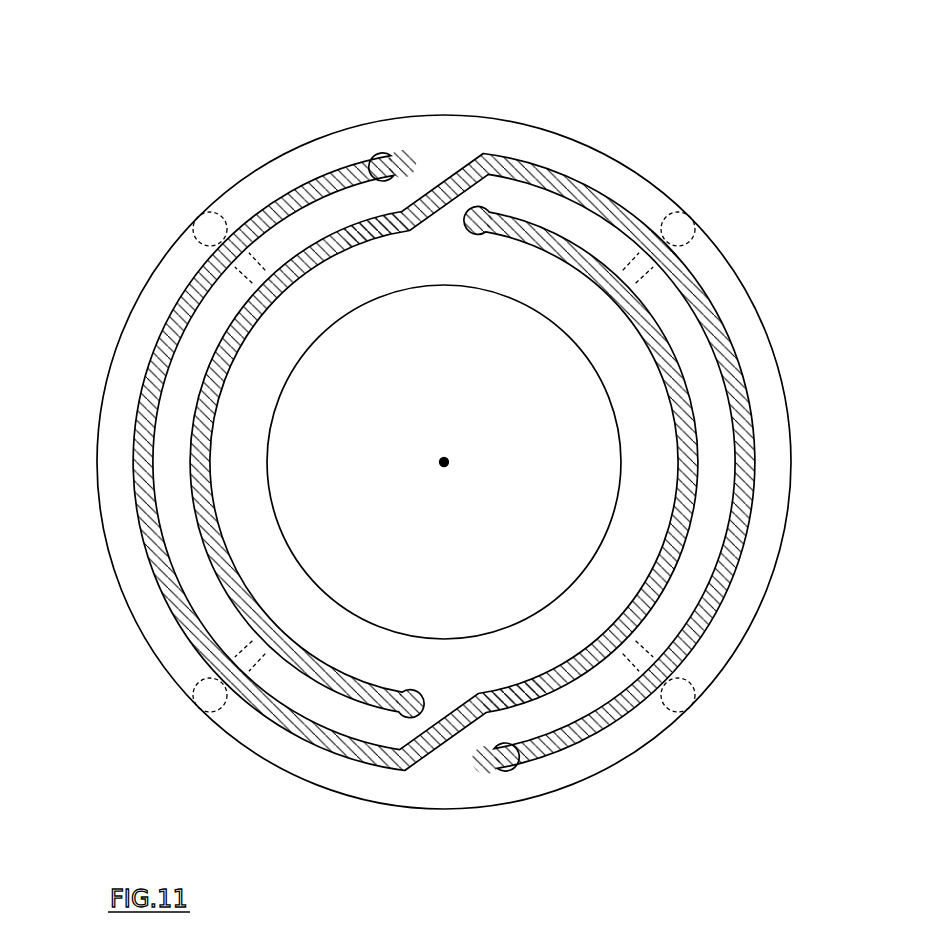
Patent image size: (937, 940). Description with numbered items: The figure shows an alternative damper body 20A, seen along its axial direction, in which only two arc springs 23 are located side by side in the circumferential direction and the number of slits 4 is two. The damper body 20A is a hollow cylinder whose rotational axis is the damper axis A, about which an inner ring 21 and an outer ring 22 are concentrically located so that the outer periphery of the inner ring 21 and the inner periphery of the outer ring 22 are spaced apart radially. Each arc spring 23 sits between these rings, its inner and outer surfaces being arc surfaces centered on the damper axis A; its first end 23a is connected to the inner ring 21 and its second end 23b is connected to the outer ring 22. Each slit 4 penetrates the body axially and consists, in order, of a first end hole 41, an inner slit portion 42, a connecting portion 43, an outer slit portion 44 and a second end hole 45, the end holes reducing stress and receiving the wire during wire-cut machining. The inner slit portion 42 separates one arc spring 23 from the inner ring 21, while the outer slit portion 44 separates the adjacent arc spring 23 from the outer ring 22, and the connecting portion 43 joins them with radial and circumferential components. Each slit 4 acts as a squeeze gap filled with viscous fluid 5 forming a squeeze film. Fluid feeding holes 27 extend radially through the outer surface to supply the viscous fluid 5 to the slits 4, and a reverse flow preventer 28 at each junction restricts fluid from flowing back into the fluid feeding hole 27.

The damper body 20A is at (677, 110).
The outer slit portion 44 is at (577, 177).
The inner ring 21 is at (365, 272).
The damper axis A is at (449, 460).
The outer ring 22 is at (310, 163).
The slit 4 is at (295, 730).
The viscous fluid 5 is at (543, 747).
The arc spring 23 is at (474, 453).
The first end 23a is at (498, 177).
The second end 23b is at (427, 173).
The connecting portion 43 is at (455, 167).
The inner slit portion 42 is at (248, 337).
The second end hole 45 is at (393, 153).
The first end hole 41 is at (472, 232).
The fluid feeding hole 27 is at (250, 265).
The reverse flow preventer 28 is at (216, 231).